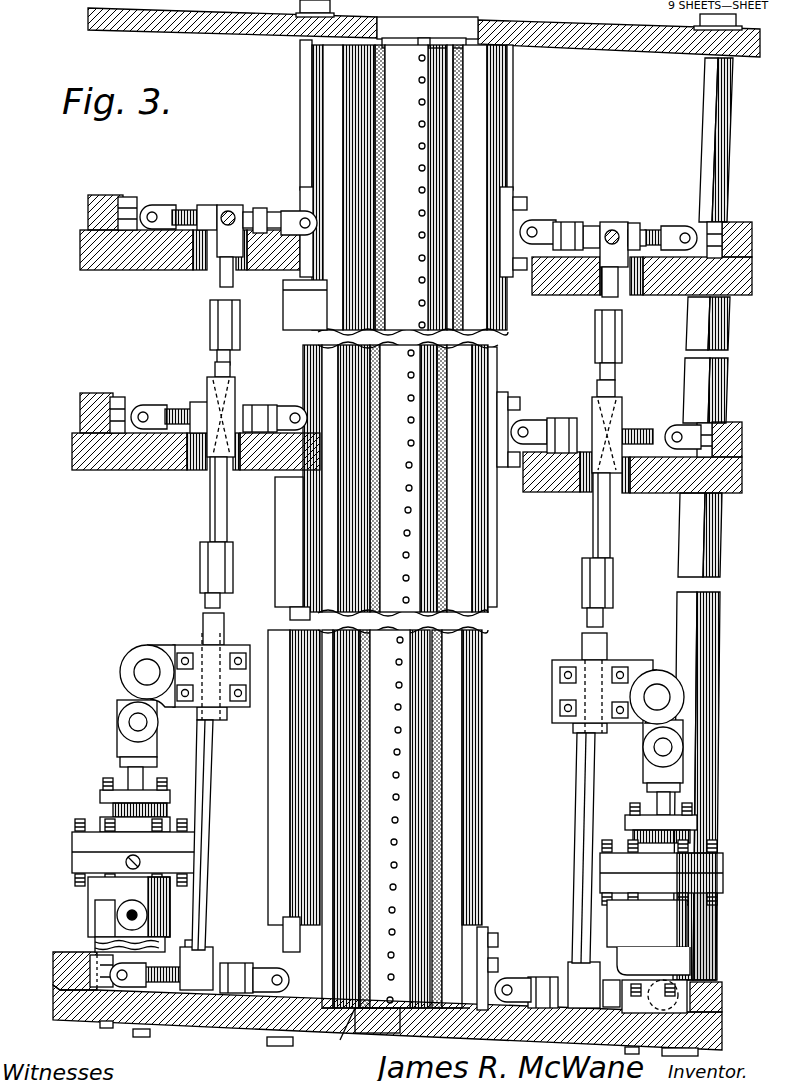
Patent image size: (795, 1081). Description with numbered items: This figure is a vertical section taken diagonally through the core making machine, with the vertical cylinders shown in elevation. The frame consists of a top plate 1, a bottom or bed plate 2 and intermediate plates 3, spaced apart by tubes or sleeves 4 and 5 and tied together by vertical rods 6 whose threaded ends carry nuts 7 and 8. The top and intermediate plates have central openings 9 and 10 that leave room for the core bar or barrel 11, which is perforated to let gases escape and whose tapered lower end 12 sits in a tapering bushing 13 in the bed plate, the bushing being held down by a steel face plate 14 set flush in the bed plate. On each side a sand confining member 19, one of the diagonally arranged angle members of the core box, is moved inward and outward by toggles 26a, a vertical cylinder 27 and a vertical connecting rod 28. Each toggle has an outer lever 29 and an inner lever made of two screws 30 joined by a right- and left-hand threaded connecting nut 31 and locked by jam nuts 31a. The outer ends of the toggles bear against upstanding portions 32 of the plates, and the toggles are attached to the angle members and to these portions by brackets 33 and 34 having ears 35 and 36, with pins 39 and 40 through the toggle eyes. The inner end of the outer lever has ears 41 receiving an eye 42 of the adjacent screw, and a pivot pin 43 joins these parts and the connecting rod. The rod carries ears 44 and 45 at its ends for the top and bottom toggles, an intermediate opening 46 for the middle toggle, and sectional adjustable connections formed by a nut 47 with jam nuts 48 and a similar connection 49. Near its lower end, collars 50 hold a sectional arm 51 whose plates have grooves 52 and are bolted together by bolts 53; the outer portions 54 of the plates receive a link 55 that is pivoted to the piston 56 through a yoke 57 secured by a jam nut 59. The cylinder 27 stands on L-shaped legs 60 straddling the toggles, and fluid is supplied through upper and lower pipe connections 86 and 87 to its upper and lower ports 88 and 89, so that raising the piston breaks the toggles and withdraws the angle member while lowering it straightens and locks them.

The top plate 1 is at (221, 38).
The bottom plate 2 is at (723, 1040).
The intermediate plate 3 is at (752, 286).
The tube 4 is at (300, 97).
The tube 5 is at (742, 553).
The vertical rod 6 is at (302, 614).
The nut 7 is at (332, 9).
The nut 8 is at (295, 1045).
The central opening 9 is at (452, 36).
The central opening 10 is at (500, 478).
The core bar 11 is at (406, 530).
The lower end 12 is at (377, 1021).
The bushing 13 is at (360, 1032).
The face plate 14 is at (441, 1006).
The sand confining member 19 is at (489, 563).
The toggle 26a is at (206, 205).
The vertical cylinder 27 is at (88, 890).
The connecting rod 28 is at (212, 806).
The outer lever 29 is at (656, 233).
The screw 30 is at (545, 493).
The connecting nut 31 is at (572, 222).
The jam nut 31a is at (262, 405).
The upstanding portion 32 is at (90, 201).
The bracket 33 is at (302, 190).
The bracket 34 is at (126, 197).
The ear 35 is at (154, 207).
The ear 36 is at (300, 214).
The pin 39 is at (145, 470).
The pin 40 is at (284, 292).
The ear 41 is at (219, 272).
The eye 42 is at (233, 395).
The pivot pin 43 is at (230, 212).
The ear 44 is at (246, 250).
The ear 45 is at (390, 976).
The intermediate opening 46 is at (220, 392).
The nut 47 is at (233, 566).
The jam nut 48 is at (200, 590).
The adjustable connection 49 is at (240, 325).
The collar 50 is at (225, 640).
The sectional arm 51 is at (186, 650).
The groove 52 is at (205, 672).
The bolt 53 is at (185, 695).
The outer portion 54 is at (130, 653).
The link 55 is at (160, 708).
The piston 56 is at (130, 778).
The yoke 57 is at (125, 745).
The jam nut 59 is at (158, 763).
The leg 60 is at (97, 942).
The upper pipe connection 86 is at (140, 862).
The lower pipe connection 87 is at (130, 910).
The upper port 88 is at (75, 852).
The lower port 89 is at (97, 915).